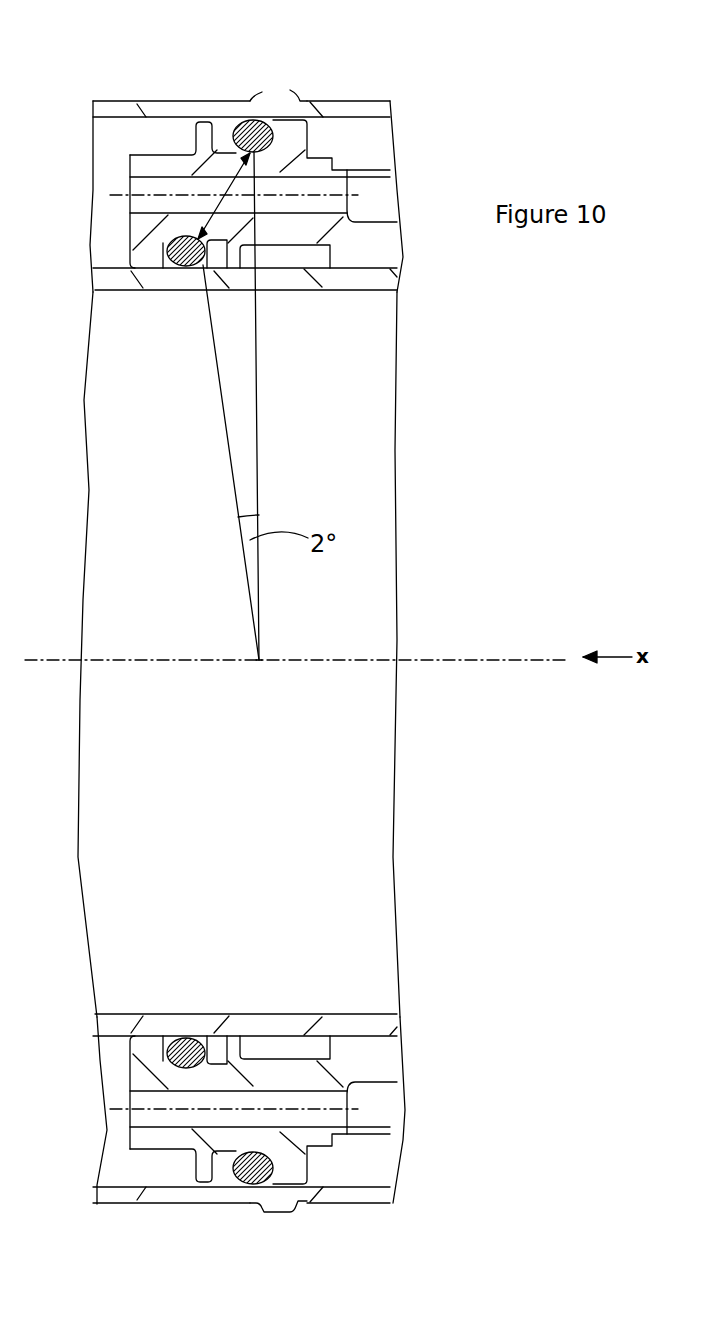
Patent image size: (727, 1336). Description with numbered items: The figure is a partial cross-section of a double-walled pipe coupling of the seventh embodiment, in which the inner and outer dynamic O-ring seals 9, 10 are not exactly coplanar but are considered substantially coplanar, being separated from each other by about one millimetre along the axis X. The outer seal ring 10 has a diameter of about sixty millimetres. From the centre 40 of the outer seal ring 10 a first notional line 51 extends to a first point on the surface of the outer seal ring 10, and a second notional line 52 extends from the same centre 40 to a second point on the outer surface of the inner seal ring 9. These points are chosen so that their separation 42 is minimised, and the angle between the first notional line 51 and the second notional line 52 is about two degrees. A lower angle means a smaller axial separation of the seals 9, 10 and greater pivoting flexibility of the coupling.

The inner dynamic O-ring seal 9 is at (178, 263).
The outer dynamic O-ring seal 10 is at (253, 120).
The centre of the outer seal ring 40 is at (262, 658).
The separation 42 is at (215, 205).
The first notional line 51 is at (258, 378).
The second notional line 52 is at (215, 377).